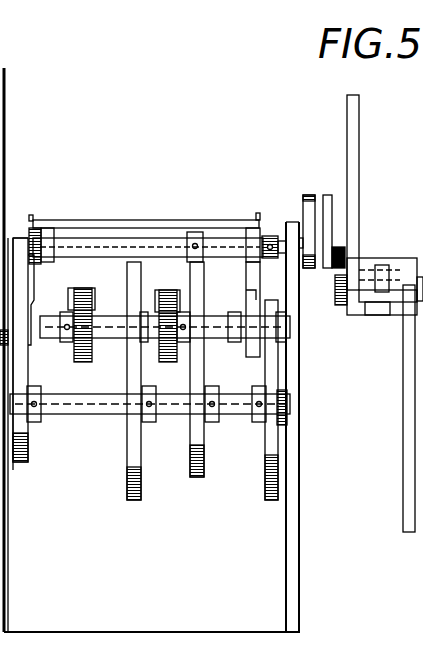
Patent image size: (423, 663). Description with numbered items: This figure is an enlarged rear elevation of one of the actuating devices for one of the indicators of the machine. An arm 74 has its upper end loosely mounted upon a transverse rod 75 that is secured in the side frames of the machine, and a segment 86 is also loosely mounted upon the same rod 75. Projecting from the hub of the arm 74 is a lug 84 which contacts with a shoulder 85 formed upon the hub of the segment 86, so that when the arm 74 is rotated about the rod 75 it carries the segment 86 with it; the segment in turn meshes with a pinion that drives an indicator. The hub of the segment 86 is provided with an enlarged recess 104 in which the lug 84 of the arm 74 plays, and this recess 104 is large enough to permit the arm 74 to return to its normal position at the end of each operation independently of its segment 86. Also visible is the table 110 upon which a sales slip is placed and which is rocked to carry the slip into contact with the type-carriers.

The table 110 is at (103, 222).
The segment 86 is at (357, 170).
The enlarged recess 104 is at (378, 282).
The lug 84 is at (373, 306).
The shoulder 85 is at (380, 314).
The transverse rod 75 is at (422, 335).
The arm 74 is at (405, 458).